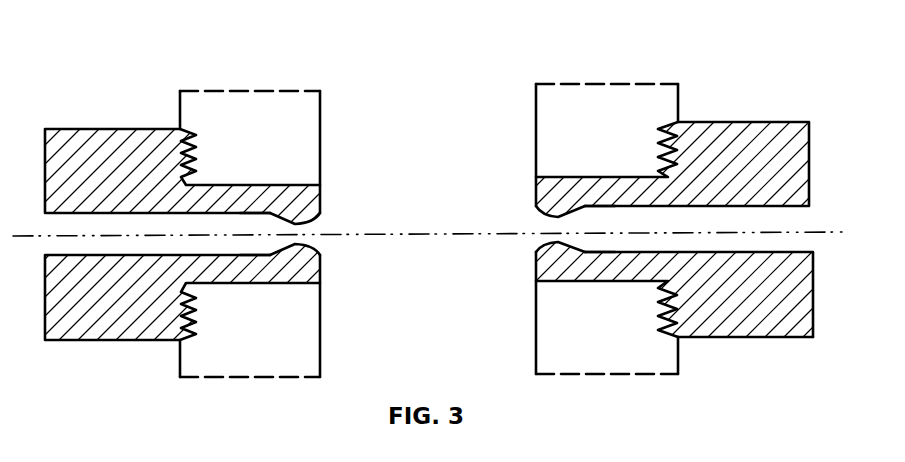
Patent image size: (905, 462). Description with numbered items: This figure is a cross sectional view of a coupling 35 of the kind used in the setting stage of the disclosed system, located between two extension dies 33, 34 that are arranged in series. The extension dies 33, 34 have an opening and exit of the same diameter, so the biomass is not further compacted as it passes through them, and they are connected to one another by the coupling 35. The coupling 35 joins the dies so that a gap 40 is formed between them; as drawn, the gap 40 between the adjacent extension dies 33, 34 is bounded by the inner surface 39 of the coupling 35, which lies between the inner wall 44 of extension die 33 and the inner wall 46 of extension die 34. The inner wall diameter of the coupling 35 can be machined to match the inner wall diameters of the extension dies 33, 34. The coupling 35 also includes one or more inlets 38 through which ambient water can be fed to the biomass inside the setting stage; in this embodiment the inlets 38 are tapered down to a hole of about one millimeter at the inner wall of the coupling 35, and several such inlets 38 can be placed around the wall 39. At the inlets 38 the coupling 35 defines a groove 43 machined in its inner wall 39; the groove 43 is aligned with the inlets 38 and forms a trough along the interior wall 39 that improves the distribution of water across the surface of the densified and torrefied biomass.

The extension die 33 is at (261, 143).
The extension die 34 is at (265, 338).
The coupling 35 is at (713, 337).
The inlet 38 is at (47, 241).
The inner surface of the coupling 39 is at (320, 268).
The gap 40 is at (372, 195).
The groove 43 is at (317, 243).
The inner wall of the extension die 44 is at (535, 129).
The inner wall of extension die 46 is at (536, 318).